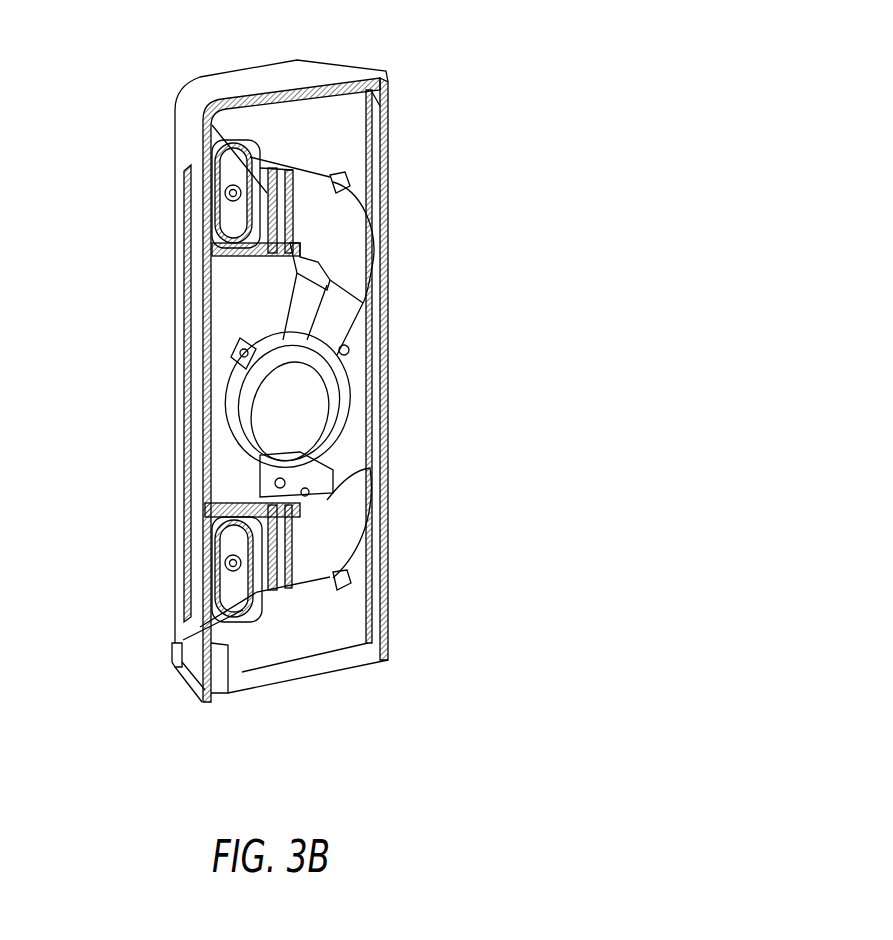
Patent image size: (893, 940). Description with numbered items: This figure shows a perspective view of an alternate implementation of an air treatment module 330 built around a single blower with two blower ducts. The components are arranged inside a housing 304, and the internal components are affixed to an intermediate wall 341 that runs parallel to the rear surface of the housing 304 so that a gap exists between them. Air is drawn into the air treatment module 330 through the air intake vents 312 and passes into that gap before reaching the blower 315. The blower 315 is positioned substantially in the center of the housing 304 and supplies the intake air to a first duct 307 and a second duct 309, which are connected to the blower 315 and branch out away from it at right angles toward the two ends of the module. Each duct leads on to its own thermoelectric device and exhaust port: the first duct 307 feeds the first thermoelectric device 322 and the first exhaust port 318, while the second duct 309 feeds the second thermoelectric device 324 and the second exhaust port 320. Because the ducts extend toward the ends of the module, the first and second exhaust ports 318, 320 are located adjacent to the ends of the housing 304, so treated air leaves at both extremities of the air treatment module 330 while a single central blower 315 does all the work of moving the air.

The housing 304 is at (272, 72).
The air treatment module 330 is at (481, 74).
The first thermoelectric device 322 is at (213, 124).
The first exhaust port 318 is at (242, 212).
The air intake vents 312 is at (182, 392).
The second exhaust port 320 is at (248, 582).
The second thermoelectric device 324 is at (173, 651).
The first duct 307 is at (345, 263).
The blower 315 is at (318, 408).
The second duct 309 is at (327, 502).
The intermediate wall 341 is at (335, 623).